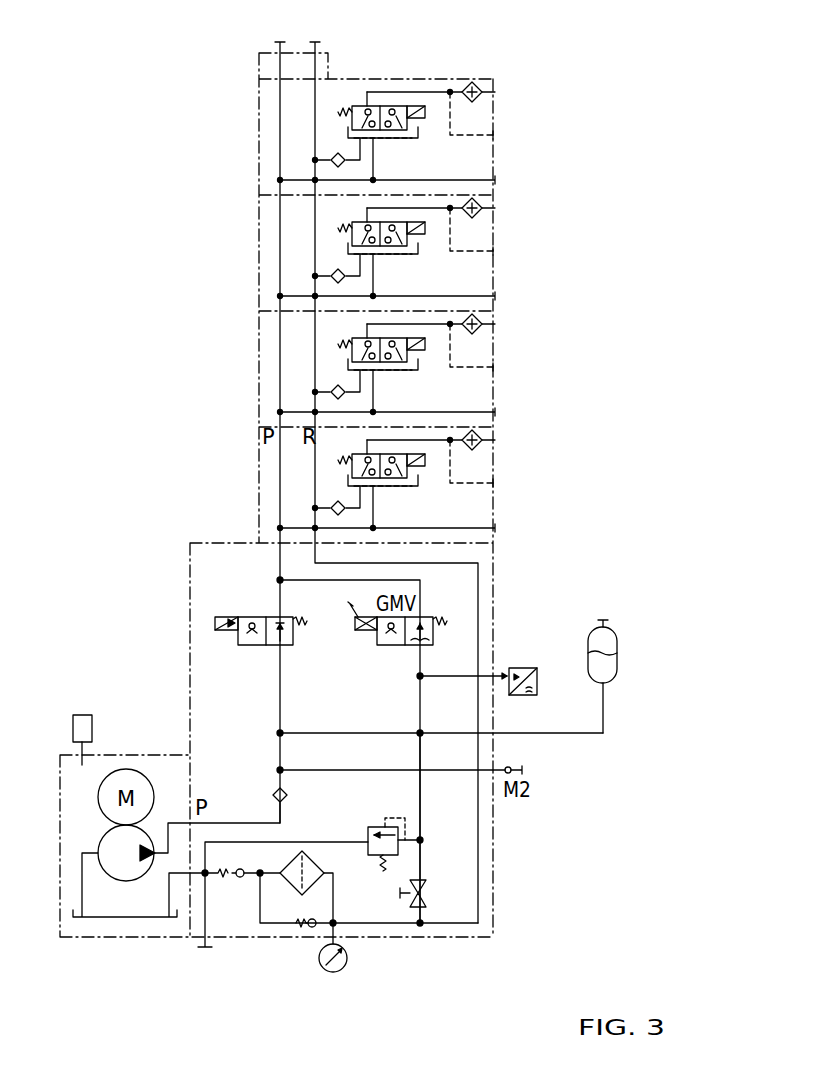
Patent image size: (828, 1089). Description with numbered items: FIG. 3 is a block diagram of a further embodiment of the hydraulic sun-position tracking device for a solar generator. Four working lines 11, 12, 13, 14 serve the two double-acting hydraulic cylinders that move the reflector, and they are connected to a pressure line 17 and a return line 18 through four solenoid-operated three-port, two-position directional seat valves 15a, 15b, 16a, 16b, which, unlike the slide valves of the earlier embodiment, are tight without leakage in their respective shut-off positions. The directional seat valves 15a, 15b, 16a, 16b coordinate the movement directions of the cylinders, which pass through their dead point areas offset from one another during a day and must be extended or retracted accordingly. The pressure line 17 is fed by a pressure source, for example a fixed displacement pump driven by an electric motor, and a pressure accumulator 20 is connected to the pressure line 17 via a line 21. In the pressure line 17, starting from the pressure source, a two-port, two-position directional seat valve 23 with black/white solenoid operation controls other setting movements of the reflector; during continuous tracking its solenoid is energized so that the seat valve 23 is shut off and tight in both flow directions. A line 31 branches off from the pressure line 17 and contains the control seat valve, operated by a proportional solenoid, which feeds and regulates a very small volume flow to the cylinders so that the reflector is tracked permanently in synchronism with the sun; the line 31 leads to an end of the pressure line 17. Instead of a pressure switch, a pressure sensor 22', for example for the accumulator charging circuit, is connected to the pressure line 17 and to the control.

The working line 11 is at (490, 81).
The working line 12 is at (420, 241).
The working line 13 is at (420, 357).
The working line 14 is at (420, 473).
The 3/2 directional seat valve 15a is at (390, 104).
The 3/2 directional seat valve 15b is at (374, 222).
The 3/2 directional seat valve 16a is at (374, 338).
The 3/2 directional seat valve 16b is at (374, 454).
The pressure line 17 is at (280, 215).
The return line 18 is at (315, 238).
The pressure accumulator 20 is at (617, 645).
The line 21 is at (552, 738).
The pressure sensor 22' is at (482, 653).
The 2/2 directional seat valve 23 is at (258, 646).
The line 31 is at (418, 702).